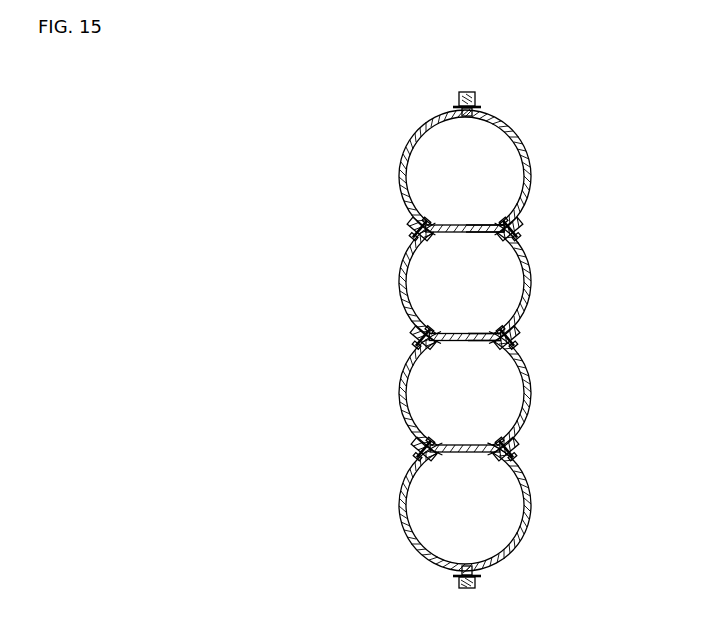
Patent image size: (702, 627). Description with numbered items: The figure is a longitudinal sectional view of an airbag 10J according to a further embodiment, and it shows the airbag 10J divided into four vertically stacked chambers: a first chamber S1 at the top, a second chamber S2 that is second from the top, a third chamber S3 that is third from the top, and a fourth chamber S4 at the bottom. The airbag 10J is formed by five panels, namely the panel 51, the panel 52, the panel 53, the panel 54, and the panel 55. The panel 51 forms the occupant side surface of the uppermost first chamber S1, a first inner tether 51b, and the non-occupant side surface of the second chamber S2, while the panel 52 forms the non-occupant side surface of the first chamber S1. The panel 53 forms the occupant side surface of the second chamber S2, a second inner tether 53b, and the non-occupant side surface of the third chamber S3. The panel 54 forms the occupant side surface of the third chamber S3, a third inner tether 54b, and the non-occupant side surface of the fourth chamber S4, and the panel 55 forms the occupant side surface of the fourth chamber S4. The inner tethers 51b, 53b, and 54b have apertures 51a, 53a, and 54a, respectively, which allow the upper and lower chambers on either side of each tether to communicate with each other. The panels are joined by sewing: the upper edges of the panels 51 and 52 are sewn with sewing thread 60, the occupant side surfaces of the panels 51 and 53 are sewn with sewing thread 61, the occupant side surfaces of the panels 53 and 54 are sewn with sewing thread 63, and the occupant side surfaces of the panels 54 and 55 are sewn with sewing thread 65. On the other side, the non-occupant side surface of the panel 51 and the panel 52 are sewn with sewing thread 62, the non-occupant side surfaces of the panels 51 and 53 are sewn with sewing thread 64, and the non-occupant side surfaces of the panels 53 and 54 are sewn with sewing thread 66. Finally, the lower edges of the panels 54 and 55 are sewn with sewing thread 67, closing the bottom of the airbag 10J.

The airbag 10J is at (368, 144).
The panel 51 is at (402, 178).
The panel 52 is at (517, 130).
The aperture 51a is at (466, 224).
The first inner tether 51b is at (488, 223).
The panel 53 is at (402, 292).
The aperture 53a is at (466, 333).
The second inner tether 53b is at (489, 330).
The panel 54 is at (400, 400).
The aperture 54a is at (466, 445).
The third inner tether 54b is at (487, 455).
The panel 55 is at (404, 512).
The sewing thread 60 is at (453, 106).
The sewing thread 61 is at (408, 238).
The sewing thread 62 is at (525, 232).
The sewing thread 63 is at (410, 344).
The sewing thread 64 is at (521, 333).
The sewing thread 65 is at (412, 462).
The sewing thread 66 is at (520, 445).
The sewing thread 67 is at (448, 579).
The first chamber S1 is at (498, 168).
The second chamber S2 is at (500, 262).
The third chamber S3 is at (487, 378).
The fourth chamber S4 is at (487, 503).